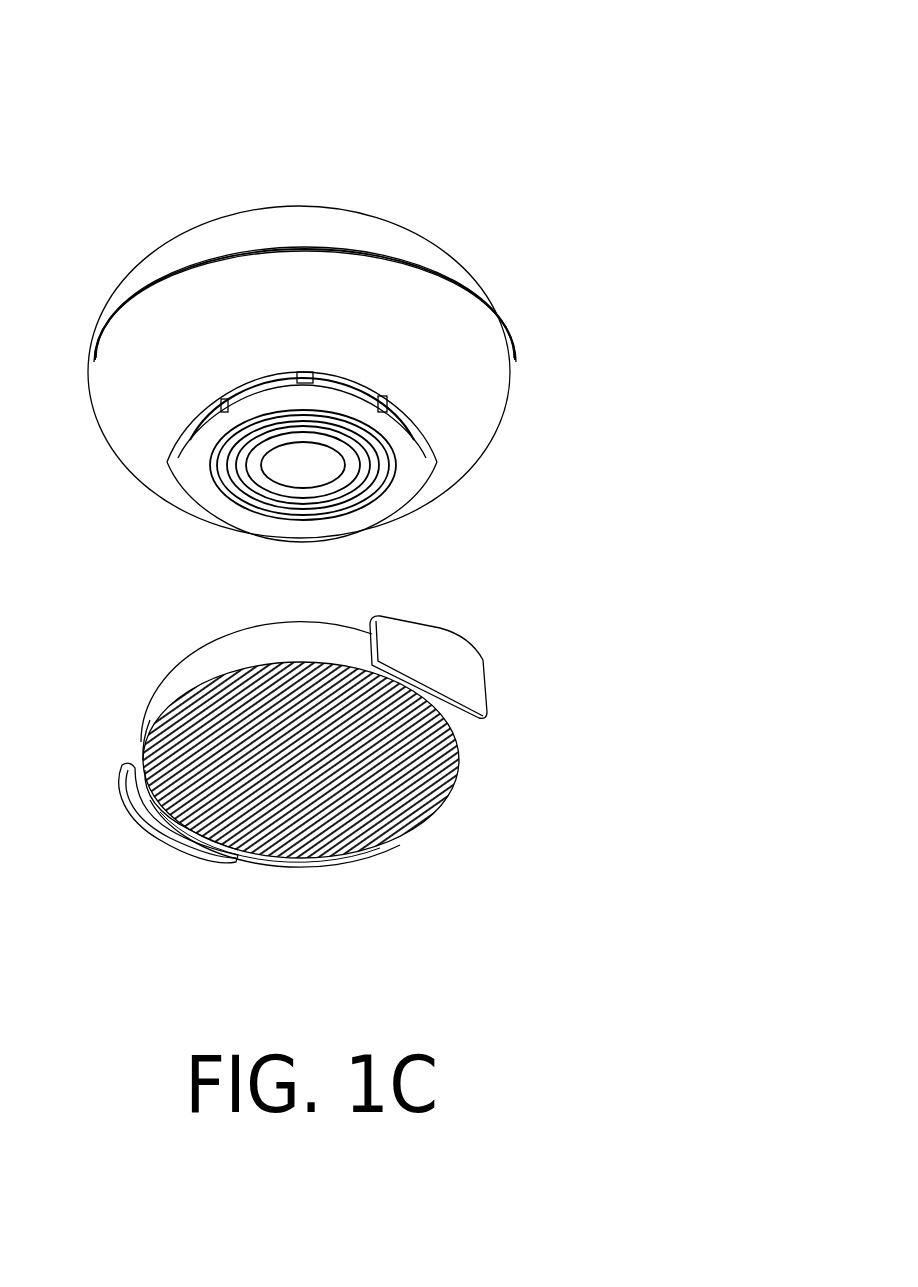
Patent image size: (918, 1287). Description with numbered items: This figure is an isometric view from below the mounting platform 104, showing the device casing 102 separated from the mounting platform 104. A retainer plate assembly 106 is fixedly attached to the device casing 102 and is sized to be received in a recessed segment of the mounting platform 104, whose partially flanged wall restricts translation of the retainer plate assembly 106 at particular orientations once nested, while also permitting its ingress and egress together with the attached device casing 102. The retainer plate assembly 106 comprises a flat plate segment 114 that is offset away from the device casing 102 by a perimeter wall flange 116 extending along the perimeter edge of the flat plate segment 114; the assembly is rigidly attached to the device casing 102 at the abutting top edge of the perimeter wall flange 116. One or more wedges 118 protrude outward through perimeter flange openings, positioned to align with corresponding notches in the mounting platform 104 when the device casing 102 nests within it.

The device casing 102 is at (322, 203).
The mounting platform 104 is at (455, 793).
The retainer plate assembly 106 is at (430, 490).
The flat plate segment 114 is at (432, 445).
The perimeter wall flange 116 is at (362, 385).
The wedges 118 is at (305, 373).